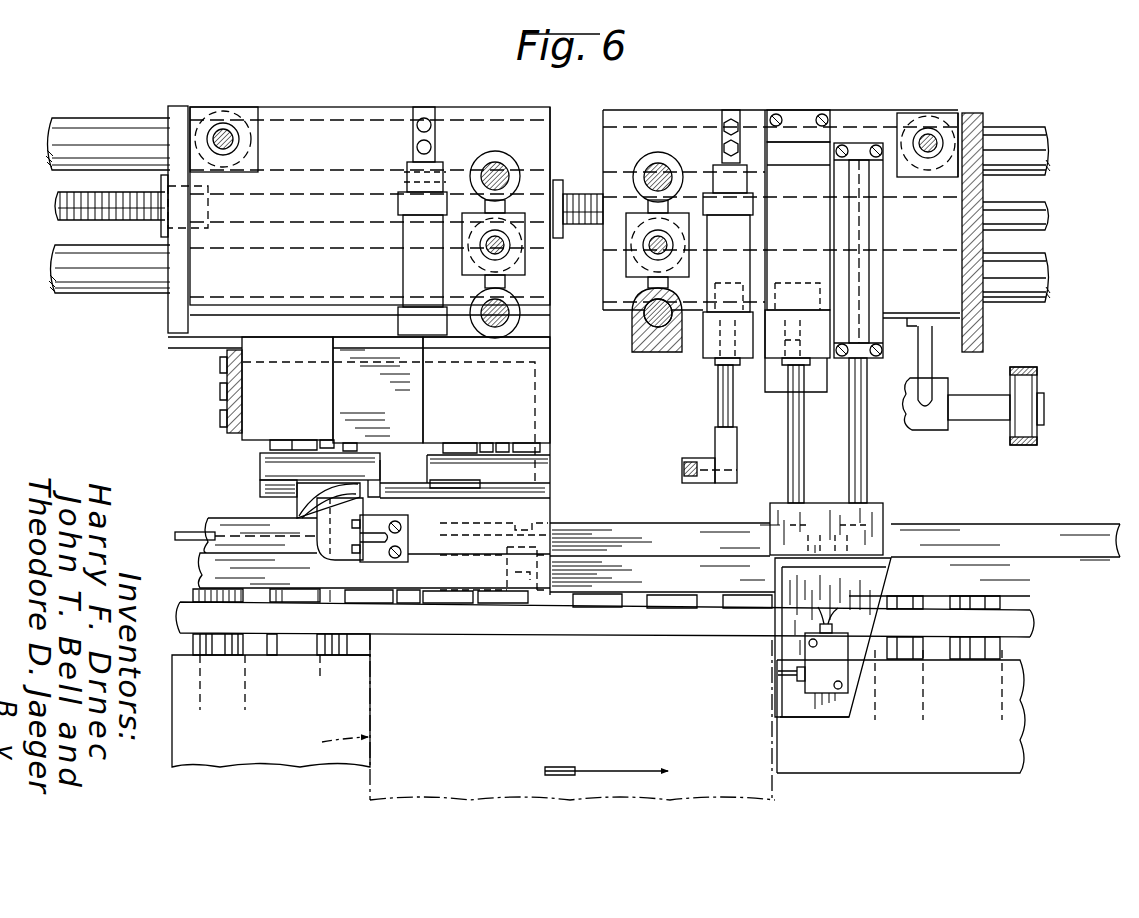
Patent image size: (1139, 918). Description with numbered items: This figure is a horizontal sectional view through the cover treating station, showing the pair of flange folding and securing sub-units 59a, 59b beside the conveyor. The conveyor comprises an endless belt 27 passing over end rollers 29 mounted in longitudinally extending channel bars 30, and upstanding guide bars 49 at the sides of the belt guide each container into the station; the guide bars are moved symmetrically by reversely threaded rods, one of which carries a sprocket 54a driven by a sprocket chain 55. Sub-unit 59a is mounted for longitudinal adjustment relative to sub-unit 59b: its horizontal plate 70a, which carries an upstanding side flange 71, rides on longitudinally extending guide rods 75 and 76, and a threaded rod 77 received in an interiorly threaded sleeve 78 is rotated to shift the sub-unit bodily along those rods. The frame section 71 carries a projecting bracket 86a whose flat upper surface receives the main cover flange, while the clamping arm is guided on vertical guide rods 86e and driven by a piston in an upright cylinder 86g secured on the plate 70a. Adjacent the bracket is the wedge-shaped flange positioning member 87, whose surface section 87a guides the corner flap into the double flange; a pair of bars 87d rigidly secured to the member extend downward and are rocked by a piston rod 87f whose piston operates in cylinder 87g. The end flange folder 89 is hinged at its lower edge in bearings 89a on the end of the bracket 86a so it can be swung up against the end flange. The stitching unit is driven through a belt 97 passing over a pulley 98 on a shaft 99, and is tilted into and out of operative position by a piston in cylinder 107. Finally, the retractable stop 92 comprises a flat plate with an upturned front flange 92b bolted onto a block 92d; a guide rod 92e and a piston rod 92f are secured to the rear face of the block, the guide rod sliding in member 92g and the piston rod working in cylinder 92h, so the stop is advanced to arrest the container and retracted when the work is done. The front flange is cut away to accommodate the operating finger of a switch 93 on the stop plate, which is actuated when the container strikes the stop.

The sub-unit 59a is at (407, 70).
The sub-unit 59b is at (835, 88).
The horizontal plate 70a is at (319, 110).
The upstanding side flange 71 is at (172, 312).
The guide rod 75 is at (60, 137).
The guide rod 76 is at (60, 258).
The threaded rod 77 is at (55, 206).
The interiorly threaded sleeve 78 is at (560, 187).
The cylinder 107 is at (246, 107).
The projecting bracket 86a is at (497, 580).
The vertical guide rods 86e is at (658, 172).
The upright cylinder 86g is at (522, 273).
The flange positioning member 87 is at (258, 466).
The guide surface 87a is at (296, 497).
The bars 87d is at (688, 475).
The piston rod 87f is at (720, 397).
The cylinder 87g is at (410, 276).
The end flange folder 89 is at (326, 562).
The bearings 89a is at (372, 565).
The sprocket chain 55 is at (190, 533).
The sprocket 54a is at (659, 545).
The retractable stop 92 is at (862, 683).
The upturned front flange 92b is at (777, 652).
The block 92d is at (880, 507).
The guide rod 92e is at (858, 457).
The piston rod 92f is at (795, 432).
The guide member 92g is at (870, 282).
The cylinder 92h is at (814, 213).
The switch 93 is at (815, 718).
The belt 97 is at (1025, 370).
The pulley 98 is at (1045, 420).
The shaft 99 is at (978, 418).
The end rollers 29 is at (295, 645).
The endless belt 27 is at (252, 762).
The guide bars 49 is at (442, 675).
The channel bars 30 is at (1088, 588).